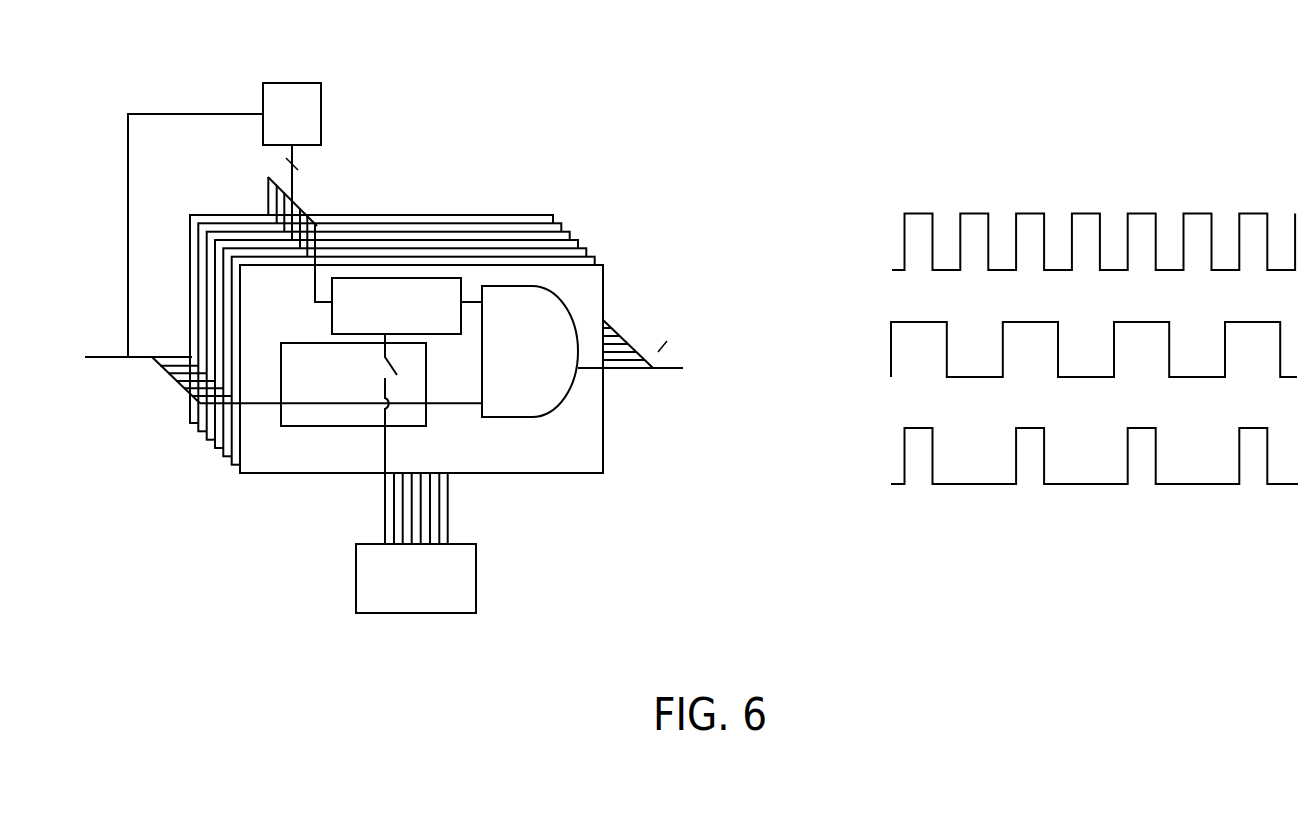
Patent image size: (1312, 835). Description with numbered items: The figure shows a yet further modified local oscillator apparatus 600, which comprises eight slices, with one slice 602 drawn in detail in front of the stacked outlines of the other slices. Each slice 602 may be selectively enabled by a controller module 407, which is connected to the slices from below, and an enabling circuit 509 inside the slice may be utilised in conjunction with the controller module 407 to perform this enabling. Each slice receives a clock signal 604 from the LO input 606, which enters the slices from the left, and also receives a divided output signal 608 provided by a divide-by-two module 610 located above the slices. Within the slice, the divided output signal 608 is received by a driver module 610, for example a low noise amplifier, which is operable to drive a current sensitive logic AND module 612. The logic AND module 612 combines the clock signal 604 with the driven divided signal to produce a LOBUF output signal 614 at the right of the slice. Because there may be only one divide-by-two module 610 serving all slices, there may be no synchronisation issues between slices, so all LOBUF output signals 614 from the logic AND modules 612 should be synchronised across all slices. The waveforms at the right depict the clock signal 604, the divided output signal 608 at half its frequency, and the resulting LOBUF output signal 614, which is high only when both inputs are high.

The modified local oscillator apparatus 600 is at (562, 136).
The slice 602 is at (606, 428).
The clock signal 604 is at (806, 214).
The LO input 606 is at (110, 360).
The DIV2 output signal 608 is at (806, 329).
The divide-by-2 module 610 is at (322, 99).
The logic AND module 612 is at (560, 405).
The LOBUF output signal 614 is at (806, 432).
The enabling circuit 509 is at (279, 424).
The controller module 407 is at (356, 575).